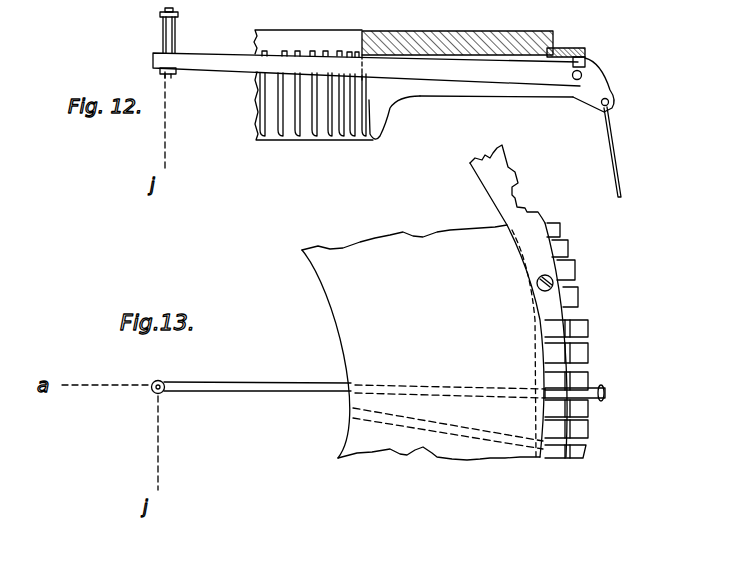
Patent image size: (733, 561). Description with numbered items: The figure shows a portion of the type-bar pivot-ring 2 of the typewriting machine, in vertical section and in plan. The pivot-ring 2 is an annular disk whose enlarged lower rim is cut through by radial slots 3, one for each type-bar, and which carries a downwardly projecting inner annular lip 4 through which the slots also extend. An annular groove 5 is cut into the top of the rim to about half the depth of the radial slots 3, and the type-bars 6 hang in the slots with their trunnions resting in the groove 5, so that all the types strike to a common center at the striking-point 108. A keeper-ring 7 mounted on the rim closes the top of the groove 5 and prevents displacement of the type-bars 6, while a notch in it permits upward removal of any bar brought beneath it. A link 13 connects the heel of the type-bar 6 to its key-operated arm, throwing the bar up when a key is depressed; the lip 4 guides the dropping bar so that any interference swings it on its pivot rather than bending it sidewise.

In FIG. 12, the pivot-ring 2 is at (447, 42).
In FIG. 13, the pivot-ring 2 is at (362, 307).
In FIG. 12, the radial slots 3 is at (290, 113).
In FIG. 13, the radial slots 3 is at (578, 313).
In FIG. 12, the inner annular lip 4 is at (371, 143).
In FIG. 12, the annular groove 5 is at (582, 66).
In FIG. 13, the annular groove 5 is at (587, 430).
In FIG. 12, the type-bars 6 is at (227, 60).
In FIG. 13, the type-bars 6 is at (273, 382).
In FIG. 12, the keeper-ring 7 is at (560, 50).
In FIG. 13, the keeper-ring 7 is at (487, 178).
In FIG. 12, the links 13 is at (618, 168).
In FIG. 13, the striking-point of the type 108 is at (154, 393).